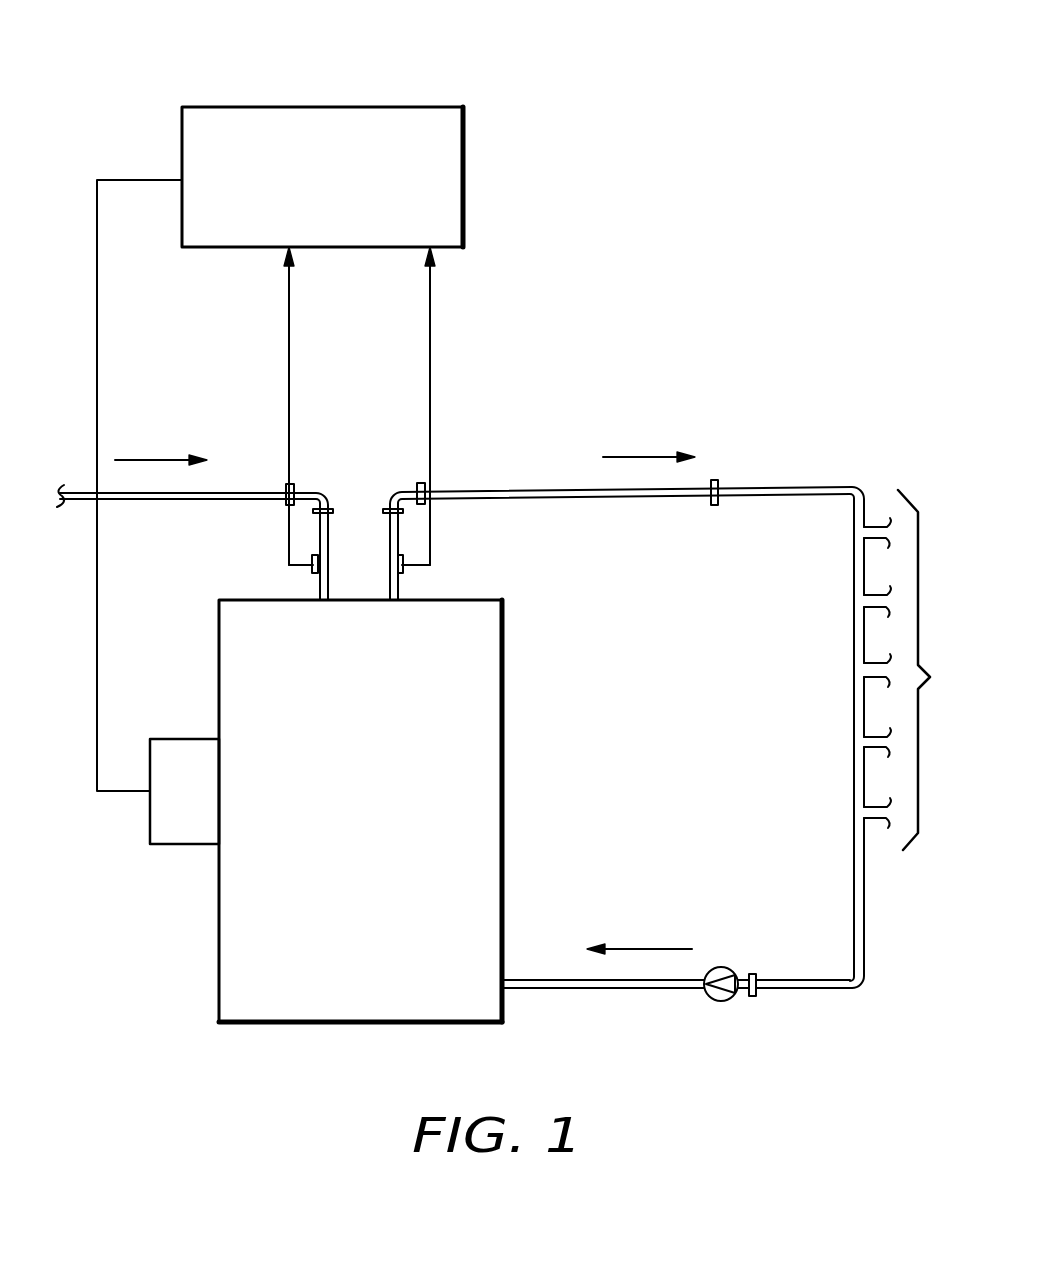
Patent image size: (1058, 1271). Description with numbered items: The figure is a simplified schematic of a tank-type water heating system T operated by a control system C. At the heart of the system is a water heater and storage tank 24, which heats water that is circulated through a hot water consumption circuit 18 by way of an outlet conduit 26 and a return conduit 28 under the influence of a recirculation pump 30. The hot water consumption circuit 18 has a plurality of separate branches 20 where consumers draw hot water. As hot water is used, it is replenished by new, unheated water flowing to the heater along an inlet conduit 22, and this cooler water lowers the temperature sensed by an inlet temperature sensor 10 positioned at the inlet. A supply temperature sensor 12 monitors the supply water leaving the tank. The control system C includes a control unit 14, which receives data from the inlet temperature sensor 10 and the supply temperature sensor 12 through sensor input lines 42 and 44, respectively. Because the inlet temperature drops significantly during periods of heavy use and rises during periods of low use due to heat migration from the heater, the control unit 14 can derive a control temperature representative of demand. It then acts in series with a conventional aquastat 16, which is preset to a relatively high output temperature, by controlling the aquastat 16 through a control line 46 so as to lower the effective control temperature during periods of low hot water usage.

The inlet temperature sensor 10 is at (312, 568).
The supply temperature sensor 12 is at (403, 570).
The control unit 14 is at (347, 107).
The aquastat 16 is at (177, 846).
The hot water consumption circuit 18 is at (930, 677).
The branches 20 is at (886, 599).
The inlet conduit 22 is at (188, 497).
The water heater and storage tank 24 is at (255, 1022).
The outlet conduit 26 is at (537, 491).
The return conduit 28 is at (588, 990).
The recirculation pump 30 is at (726, 1000).
The sensor input line 42 is at (289, 368).
The sensor input line 44 is at (430, 372).
The control line 46 is at (97, 409).
The control system C is at (275, 100).
The tank-type water heating system T is at (542, 126).